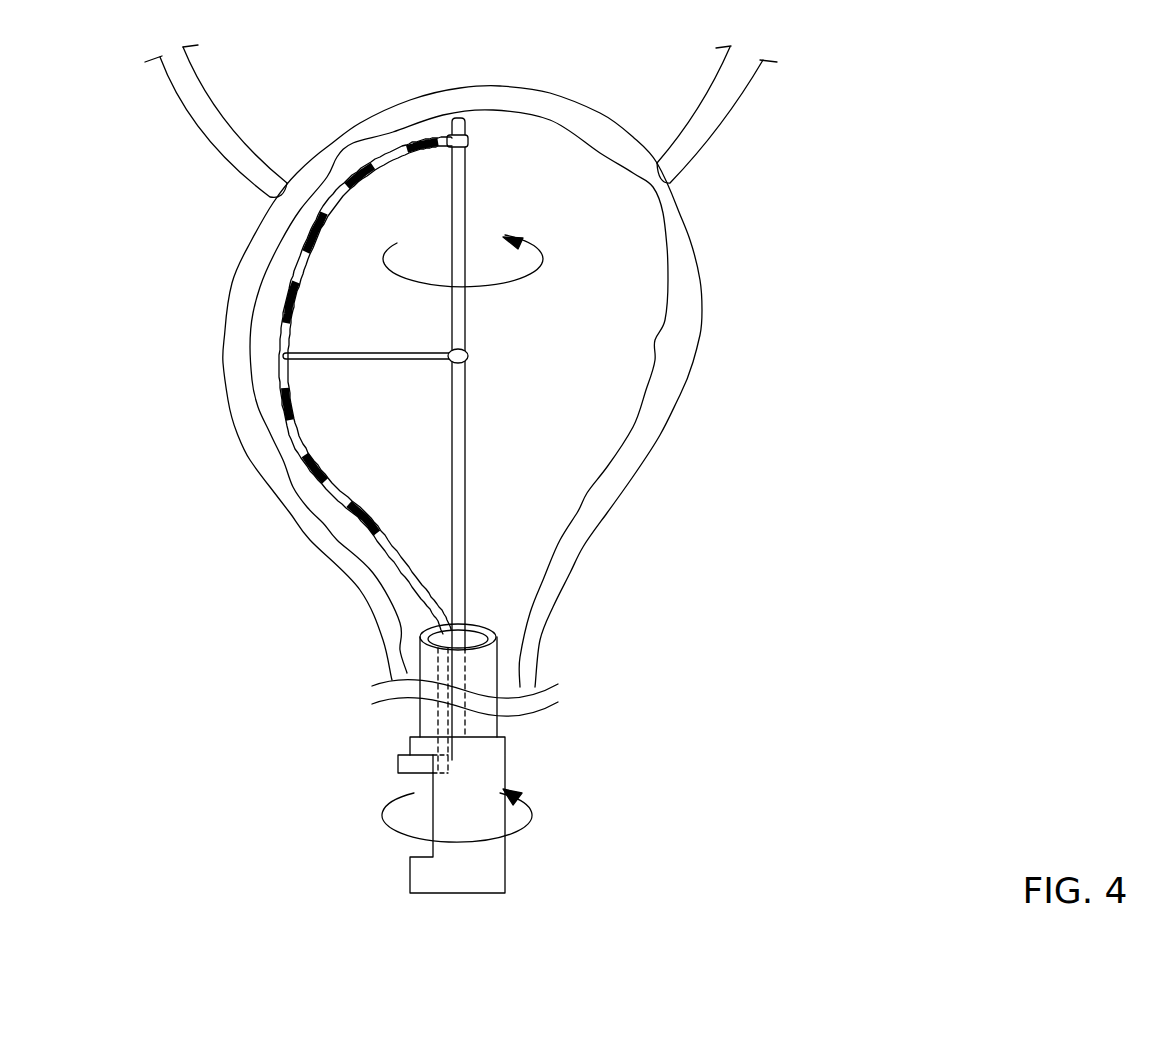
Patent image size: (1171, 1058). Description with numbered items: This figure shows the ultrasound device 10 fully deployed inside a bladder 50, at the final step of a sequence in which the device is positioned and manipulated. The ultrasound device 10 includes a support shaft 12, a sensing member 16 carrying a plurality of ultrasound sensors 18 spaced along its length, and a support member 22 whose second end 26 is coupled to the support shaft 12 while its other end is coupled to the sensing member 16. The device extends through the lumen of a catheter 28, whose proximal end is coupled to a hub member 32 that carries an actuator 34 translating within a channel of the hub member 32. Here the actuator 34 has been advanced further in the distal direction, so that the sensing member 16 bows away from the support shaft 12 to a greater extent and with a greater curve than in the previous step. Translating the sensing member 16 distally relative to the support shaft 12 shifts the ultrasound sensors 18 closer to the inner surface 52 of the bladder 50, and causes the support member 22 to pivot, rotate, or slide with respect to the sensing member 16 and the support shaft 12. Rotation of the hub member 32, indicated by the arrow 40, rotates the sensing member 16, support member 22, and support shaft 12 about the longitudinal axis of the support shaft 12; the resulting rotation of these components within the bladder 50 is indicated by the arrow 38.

The ultrasound device 10 is at (411, 507).
The support shaft 12 is at (472, 454).
The sensing member 16 is at (346, 385).
The ultrasound sensors 18 is at (423, 150).
The support member 22 is at (365, 352).
The second end 26 is at (468, 358).
The catheter 28 is at (483, 667).
The hub member 32 is at (483, 873).
The actuator 34 is at (403, 764).
The arrow 38 is at (518, 278).
The arrow 40 is at (525, 827).
The bladder 50 is at (523, 380).
The inner surface 52 is at (645, 384).